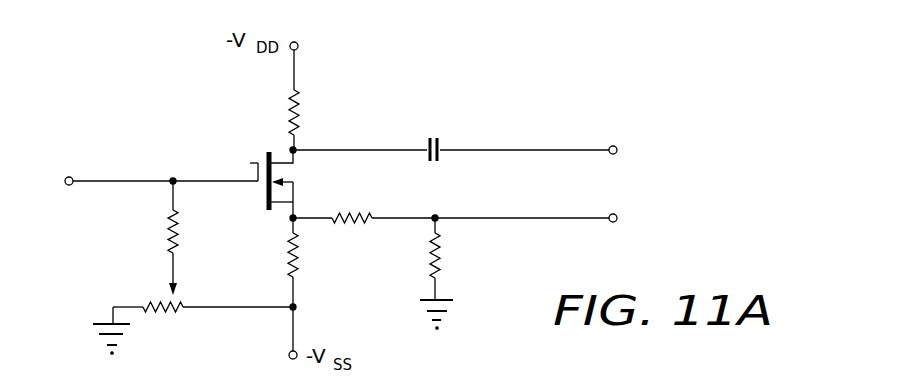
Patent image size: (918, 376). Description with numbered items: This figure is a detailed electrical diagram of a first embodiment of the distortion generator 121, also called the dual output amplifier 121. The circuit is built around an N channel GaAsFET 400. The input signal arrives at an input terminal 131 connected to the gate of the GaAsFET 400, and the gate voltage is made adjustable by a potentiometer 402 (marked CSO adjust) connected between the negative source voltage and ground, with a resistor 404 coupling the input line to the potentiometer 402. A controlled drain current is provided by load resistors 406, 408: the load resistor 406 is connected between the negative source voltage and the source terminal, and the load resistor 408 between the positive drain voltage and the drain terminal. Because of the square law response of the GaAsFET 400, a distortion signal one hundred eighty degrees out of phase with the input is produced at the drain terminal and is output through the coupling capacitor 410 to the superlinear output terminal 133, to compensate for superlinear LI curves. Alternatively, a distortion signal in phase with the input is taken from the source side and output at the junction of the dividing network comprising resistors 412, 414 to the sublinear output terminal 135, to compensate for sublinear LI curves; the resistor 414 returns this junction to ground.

The distortion generator 121 is at (532, 78).
The input terminal 131 is at (125, 153).
The superlinear output terminal 133 is at (560, 149).
The sublinear output terminal 135 is at (555, 218).
The N channel GaAsFET 400 is at (263, 157).
The potentiometer 402 is at (182, 302).
The resistor 404 is at (197, 205).
The load resistor 406 is at (297, 254).
The load resistor 408 is at (300, 97).
The coupling capacitor 410 is at (441, 146).
The resistor 412 is at (338, 212).
The resistor 414 is at (440, 258).